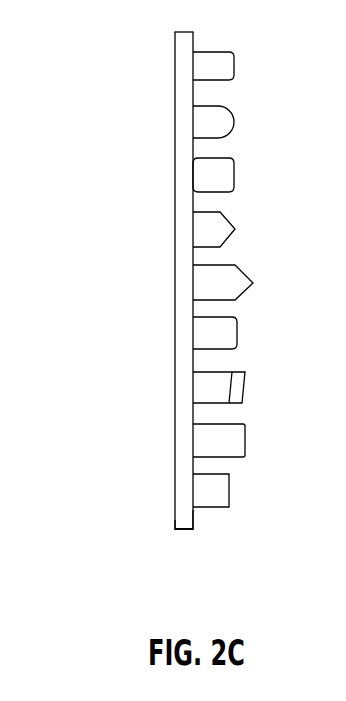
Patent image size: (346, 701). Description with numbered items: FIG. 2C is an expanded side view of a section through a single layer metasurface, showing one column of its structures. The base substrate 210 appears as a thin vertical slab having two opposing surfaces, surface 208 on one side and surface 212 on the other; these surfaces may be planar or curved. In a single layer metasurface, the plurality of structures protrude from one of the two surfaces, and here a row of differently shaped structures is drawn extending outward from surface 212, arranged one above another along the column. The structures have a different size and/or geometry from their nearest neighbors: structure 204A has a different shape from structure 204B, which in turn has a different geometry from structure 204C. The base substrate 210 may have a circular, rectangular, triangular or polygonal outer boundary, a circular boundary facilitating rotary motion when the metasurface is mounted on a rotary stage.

The structure 204A is at (230, 442).
The structure 204B is at (229, 388).
The structure 204C is at (232, 334).
The surface 208 is at (175, 462).
The base substrate 210 is at (186, 522).
The surface 212 is at (197, 515).